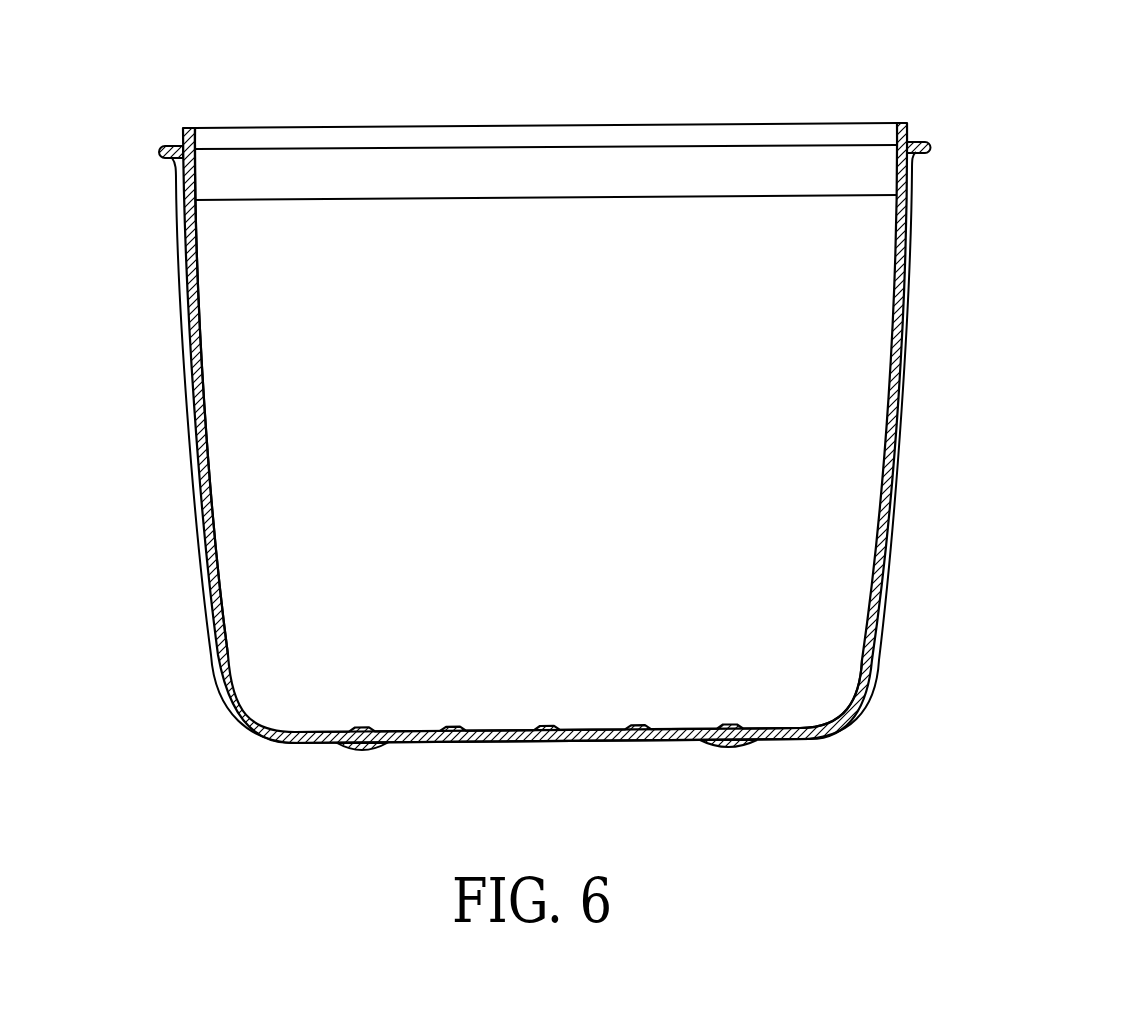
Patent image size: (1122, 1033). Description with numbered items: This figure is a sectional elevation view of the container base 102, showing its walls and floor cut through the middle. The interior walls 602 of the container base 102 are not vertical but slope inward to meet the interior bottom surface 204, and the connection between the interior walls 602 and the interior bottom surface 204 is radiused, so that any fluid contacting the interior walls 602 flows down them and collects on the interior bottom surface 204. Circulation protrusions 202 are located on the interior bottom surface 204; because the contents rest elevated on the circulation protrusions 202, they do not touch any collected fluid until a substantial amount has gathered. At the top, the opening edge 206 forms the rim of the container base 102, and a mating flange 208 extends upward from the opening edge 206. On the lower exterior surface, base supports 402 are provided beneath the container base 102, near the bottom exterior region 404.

The container base 102 is at (908, 377).
The circulation protrusions 202 is at (730, 723).
The interior bottom surface 204 is at (775, 728).
The opening edge 206 is at (925, 142).
The mating flange 208 is at (907, 127).
The base supports 402 is at (352, 753).
The bottom outer surface 404 is at (795, 740).
The interior walls 602 is at (215, 543).